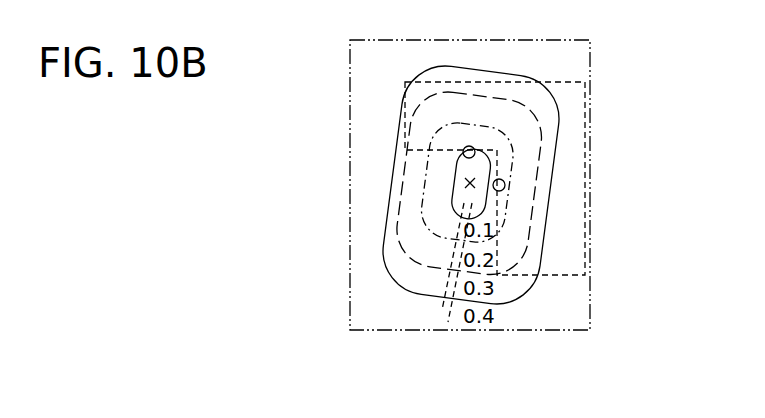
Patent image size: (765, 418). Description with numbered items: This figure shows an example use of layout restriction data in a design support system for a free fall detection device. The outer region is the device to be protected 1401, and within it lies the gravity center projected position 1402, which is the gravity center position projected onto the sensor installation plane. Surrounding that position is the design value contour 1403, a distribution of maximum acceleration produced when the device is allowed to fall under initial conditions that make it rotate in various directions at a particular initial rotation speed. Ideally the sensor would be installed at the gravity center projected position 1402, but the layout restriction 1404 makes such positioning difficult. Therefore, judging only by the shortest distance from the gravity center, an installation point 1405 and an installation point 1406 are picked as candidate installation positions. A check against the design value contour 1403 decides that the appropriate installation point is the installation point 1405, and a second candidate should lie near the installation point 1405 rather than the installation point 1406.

The device to be protected 1401 is at (349, 76).
The gravity center projected position 1402 is at (464, 183).
The design value contour 1403 is at (443, 288).
The layout restriction 1404 is at (561, 81).
The installation point 1405 is at (475, 148).
The installation point 1406 is at (505, 185).